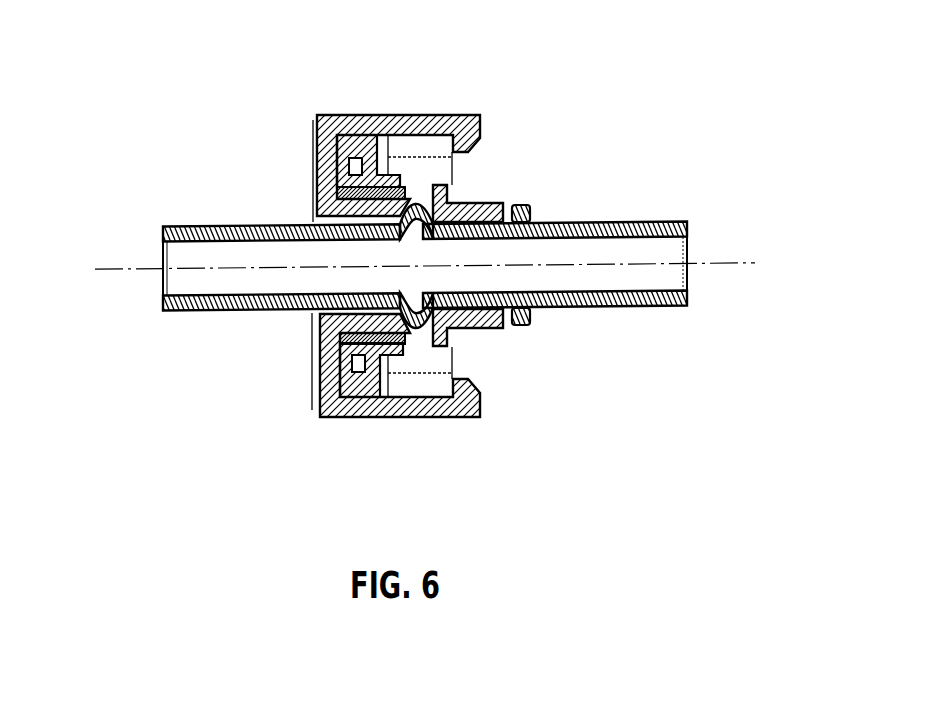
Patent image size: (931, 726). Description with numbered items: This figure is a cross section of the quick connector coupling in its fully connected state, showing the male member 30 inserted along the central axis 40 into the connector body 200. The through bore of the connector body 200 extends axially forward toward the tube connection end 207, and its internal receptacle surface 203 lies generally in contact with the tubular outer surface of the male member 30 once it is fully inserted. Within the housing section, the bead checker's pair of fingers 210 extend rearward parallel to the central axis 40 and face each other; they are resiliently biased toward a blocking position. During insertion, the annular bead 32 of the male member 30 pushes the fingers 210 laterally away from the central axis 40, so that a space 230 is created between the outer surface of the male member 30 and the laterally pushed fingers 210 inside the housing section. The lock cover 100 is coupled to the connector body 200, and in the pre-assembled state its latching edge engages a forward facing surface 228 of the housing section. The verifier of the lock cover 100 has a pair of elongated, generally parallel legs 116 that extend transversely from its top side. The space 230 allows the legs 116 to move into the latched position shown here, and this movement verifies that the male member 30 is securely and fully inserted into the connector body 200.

The lock cover 100 is at (440, 110).
The male member 30 is at (227, 308).
The central axis 40 is at (733, 258).
The annular bead 32 is at (432, 185).
The legs 116 is at (312, 350).
The connector body 200 is at (373, 400).
The internal receptacle surface 203 is at (518, 324).
The tube connection end 207 is at (534, 213).
The fingers 210 is at (340, 192).
The forward facing surface 228 is at (457, 367).
The space 230 is at (378, 138).